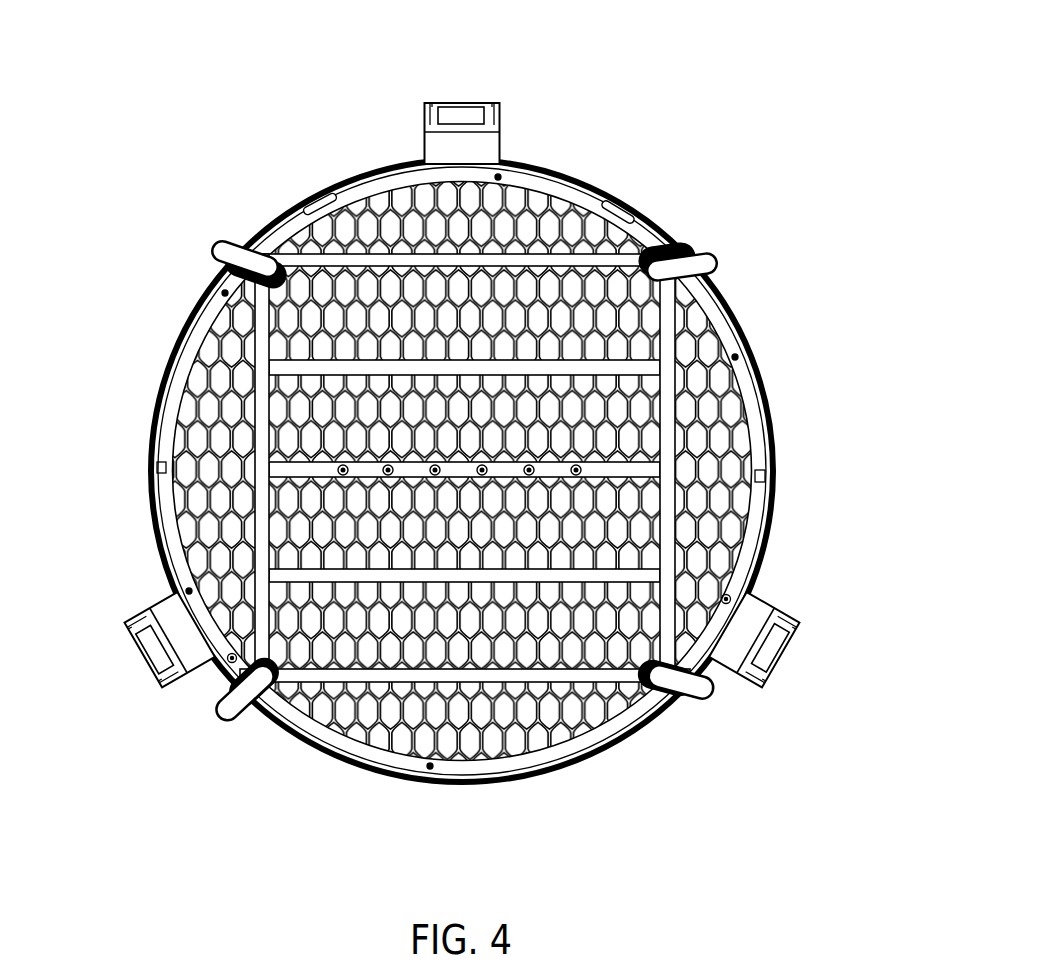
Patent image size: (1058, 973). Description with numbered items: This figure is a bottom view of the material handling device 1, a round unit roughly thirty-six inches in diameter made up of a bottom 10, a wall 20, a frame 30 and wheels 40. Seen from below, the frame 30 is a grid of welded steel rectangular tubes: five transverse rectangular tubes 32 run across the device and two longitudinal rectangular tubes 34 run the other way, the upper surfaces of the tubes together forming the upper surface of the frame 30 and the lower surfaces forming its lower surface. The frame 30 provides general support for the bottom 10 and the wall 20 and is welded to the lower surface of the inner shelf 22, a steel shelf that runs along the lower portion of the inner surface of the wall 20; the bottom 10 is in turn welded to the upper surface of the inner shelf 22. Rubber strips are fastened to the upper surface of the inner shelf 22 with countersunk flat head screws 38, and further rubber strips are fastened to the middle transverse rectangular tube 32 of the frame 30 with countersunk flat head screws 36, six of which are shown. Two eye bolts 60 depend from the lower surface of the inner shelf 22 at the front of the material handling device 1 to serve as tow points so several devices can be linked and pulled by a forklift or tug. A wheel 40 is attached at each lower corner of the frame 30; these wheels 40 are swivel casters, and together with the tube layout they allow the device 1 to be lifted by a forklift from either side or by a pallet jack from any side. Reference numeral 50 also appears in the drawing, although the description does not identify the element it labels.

The material handling device 1 is at (451, 431).
The bottom 10 is at (451, 445).
The wall 20 is at (462, 456).
The inner shelf 22 is at (562, 779).
The frame 30 is at (464, 403).
The transverse rectangular tubes 32 is at (606, 265).
The longitudinal rectangular tubes 34 is at (668, 428).
The countersunk flat head screws 36 is at (431, 772).
The countersunk flat head screws 38 is at (351, 393).
The wheels 40 is at (228, 246).
The handles 50 is at (512, 98).
The eye bolts 60 is at (316, 203).